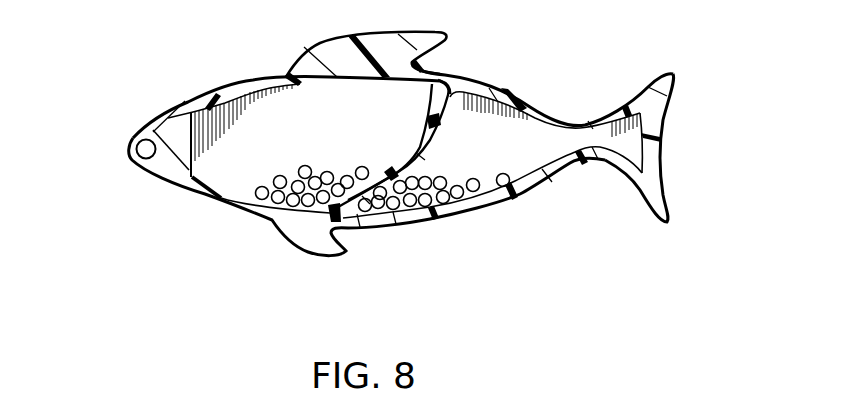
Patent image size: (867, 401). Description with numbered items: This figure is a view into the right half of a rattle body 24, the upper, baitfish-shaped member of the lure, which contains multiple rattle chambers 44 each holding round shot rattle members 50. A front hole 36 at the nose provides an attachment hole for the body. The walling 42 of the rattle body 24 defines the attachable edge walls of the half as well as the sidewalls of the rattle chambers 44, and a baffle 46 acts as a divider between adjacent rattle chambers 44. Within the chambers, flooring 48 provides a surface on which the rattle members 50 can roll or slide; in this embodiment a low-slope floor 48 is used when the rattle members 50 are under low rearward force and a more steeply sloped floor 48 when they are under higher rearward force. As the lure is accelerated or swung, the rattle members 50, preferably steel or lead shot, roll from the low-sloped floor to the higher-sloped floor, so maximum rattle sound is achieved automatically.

The rattle body 24 is at (661, 122).
The front hole 36 is at (153, 150).
The walling 42 is at (226, 88).
The rattle chamber 44 is at (250, 146).
The baffle 46 is at (446, 110).
The flooring 48 is at (393, 167).
The rattle members 50 is at (421, 198).